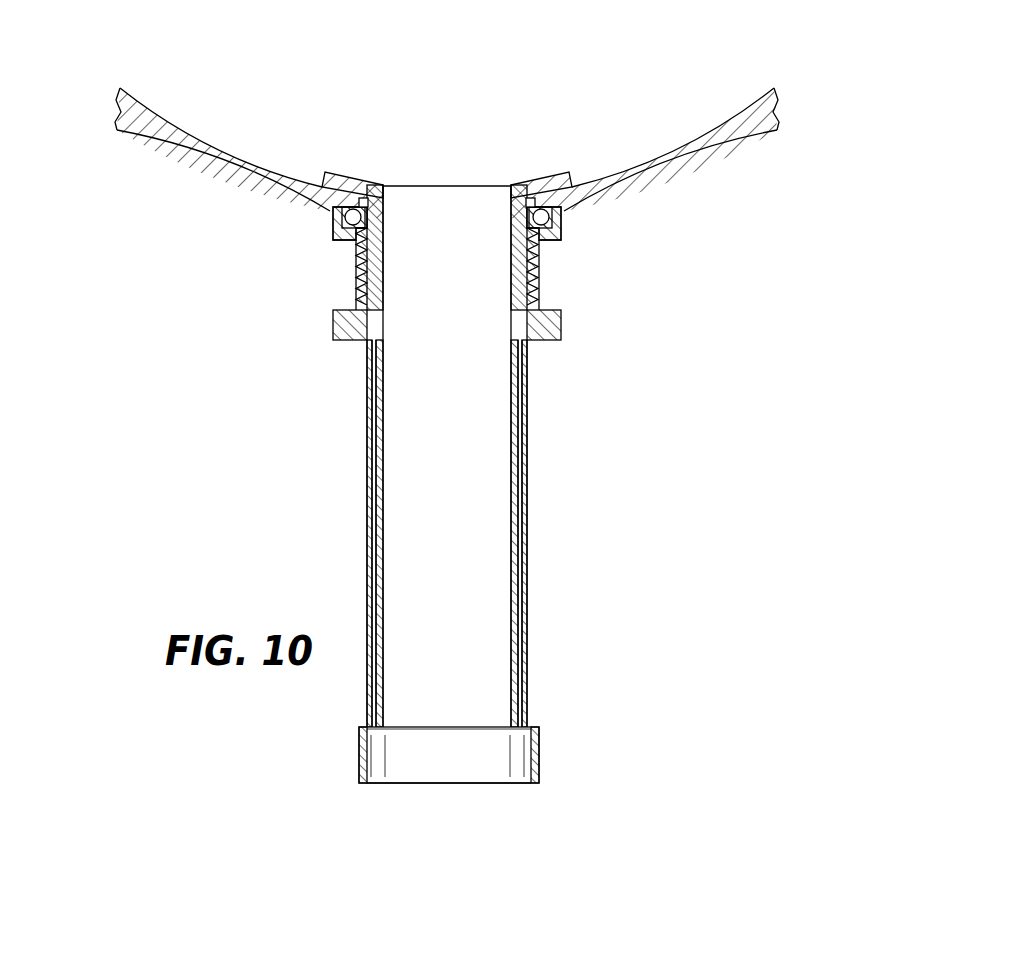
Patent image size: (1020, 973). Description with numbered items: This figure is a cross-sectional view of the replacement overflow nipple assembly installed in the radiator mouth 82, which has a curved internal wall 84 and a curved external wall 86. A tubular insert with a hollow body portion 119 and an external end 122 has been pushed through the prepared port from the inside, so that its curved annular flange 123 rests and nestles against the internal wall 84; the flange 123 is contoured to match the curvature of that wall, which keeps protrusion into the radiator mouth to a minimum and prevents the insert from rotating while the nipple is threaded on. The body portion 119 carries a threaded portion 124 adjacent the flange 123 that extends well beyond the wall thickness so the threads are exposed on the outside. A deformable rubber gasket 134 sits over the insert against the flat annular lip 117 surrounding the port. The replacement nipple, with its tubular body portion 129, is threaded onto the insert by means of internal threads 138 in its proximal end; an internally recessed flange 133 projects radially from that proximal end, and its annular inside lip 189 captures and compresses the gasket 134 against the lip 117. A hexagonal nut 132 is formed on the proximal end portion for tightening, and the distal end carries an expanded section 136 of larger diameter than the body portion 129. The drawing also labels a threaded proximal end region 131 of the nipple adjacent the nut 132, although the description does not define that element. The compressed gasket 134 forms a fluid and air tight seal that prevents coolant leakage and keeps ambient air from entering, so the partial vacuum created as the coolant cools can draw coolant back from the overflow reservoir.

The radiator mouth assembly 82 is at (800, 109).
The curved internal wall 84 is at (717, 127).
The curved external wall 86 is at (738, 150).
The annular lip 117 is at (510, 207).
The hollow body portion 119 is at (384, 386).
The external end 122 is at (463, 727).
The curved annular flange 123 is at (540, 173).
The threaded portion 124 is at (355, 252).
The tubular body portion 129 is at (527, 470).
The right clamp nut 131 is at (540, 277).
The hexagonal nut 132 is at (560, 325).
The internally recessed flange 133 is at (560, 231).
The gasket 134 is at (332, 221).
The expanded section 136 is at (540, 748).
The internal threads 138 is at (354, 299).
The annular inside lip 189 is at (383, 208).